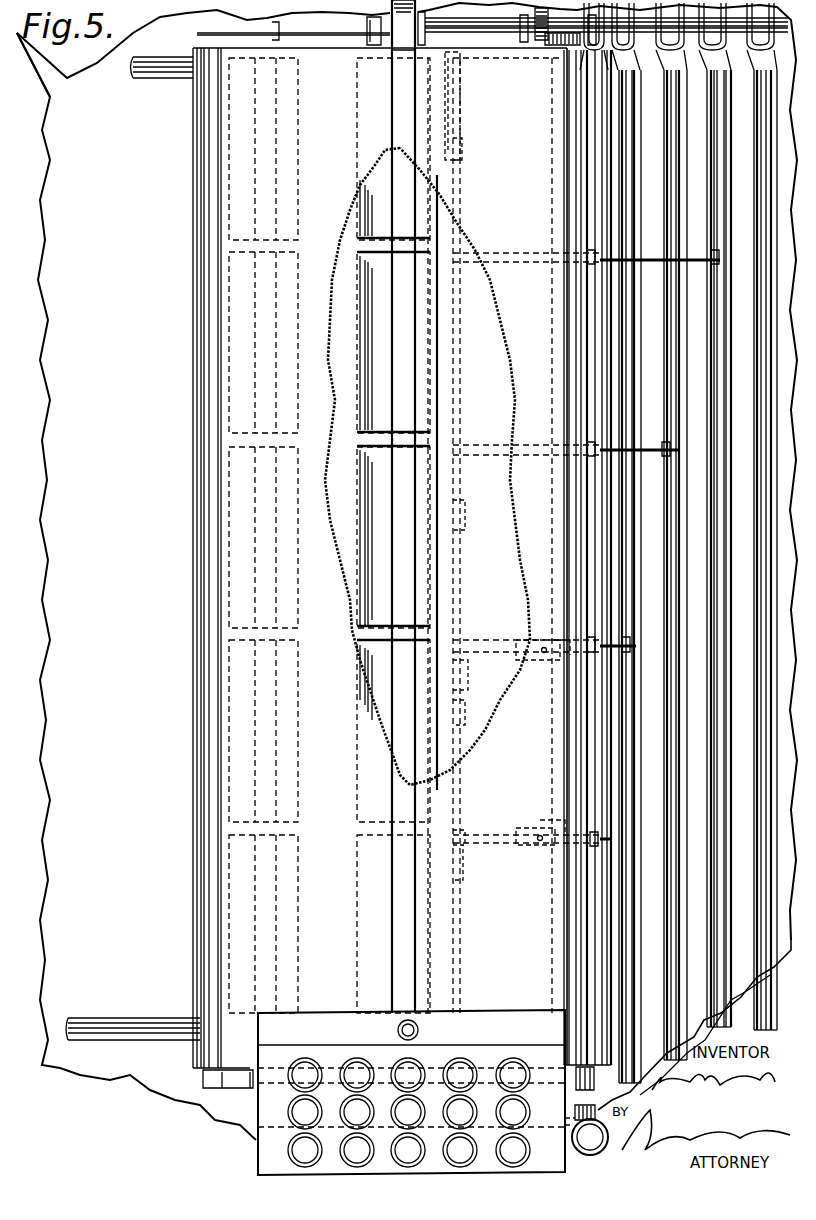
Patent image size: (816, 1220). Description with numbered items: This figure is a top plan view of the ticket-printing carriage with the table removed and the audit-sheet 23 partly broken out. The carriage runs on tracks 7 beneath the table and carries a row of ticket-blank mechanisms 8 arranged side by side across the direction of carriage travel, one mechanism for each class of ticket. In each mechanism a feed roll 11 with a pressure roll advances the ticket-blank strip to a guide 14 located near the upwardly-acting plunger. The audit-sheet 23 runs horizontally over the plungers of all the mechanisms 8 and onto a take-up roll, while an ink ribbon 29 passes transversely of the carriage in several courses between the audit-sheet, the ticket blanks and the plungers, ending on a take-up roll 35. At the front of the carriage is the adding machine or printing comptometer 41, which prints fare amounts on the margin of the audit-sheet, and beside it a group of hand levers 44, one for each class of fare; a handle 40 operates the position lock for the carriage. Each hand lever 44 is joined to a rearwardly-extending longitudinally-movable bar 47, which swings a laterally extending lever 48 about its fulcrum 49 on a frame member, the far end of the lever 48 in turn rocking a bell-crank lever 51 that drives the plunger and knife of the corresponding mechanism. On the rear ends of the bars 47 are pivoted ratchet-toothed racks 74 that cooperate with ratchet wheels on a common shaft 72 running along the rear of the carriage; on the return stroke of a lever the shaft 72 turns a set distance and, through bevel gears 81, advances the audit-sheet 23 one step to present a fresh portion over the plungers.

The tracks 7 is at (172, 78).
The ticket-blank mechanisms 8 is at (360, 147).
The feed roll 11 is at (225, 165).
The guide 14 is at (355, 512).
The audit-sheet 23 is at (220, 478).
The ink ribbon 29 is at (400, 100).
The take-up roll 35 is at (390, 13).
The handle 40 is at (420, 1030).
The adding machine or printing comptometer 41 is at (272, 1115).
The hand levers 44 is at (596, 1153).
The longitudinally-movable bar 47 is at (640, 868).
The lever 48 is at (752, 58).
The fulcrum 49 is at (548, 680).
The bell-crank lever 51 is at (462, 516).
The common shaft 72 is at (500, 33).
The ratchet-toothed racks 74 is at (711, 34).
The bevel gears 81 is at (548, 42).